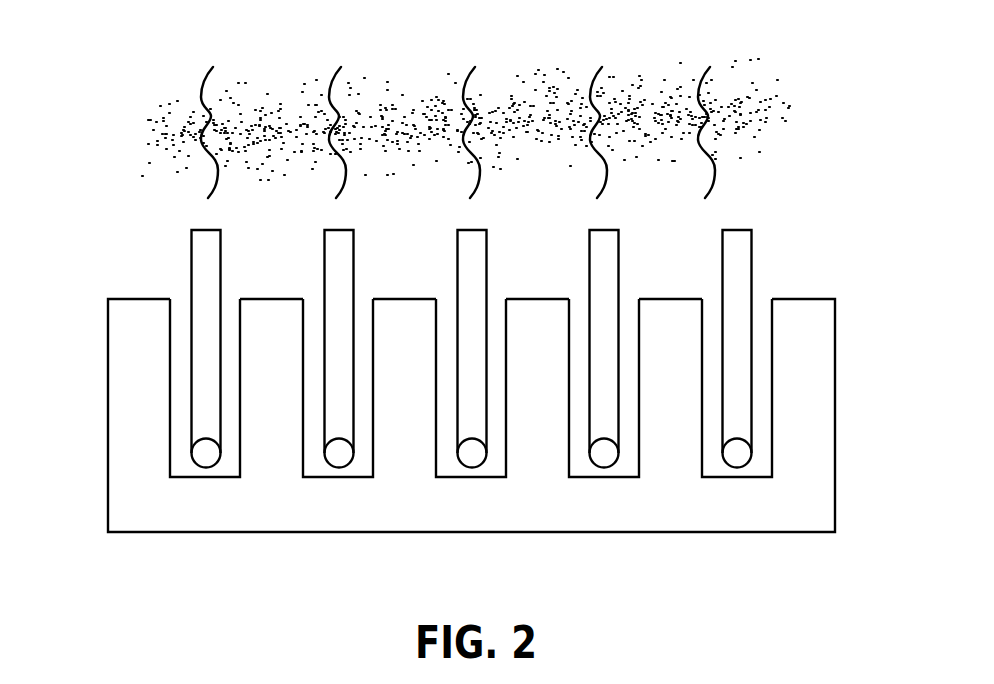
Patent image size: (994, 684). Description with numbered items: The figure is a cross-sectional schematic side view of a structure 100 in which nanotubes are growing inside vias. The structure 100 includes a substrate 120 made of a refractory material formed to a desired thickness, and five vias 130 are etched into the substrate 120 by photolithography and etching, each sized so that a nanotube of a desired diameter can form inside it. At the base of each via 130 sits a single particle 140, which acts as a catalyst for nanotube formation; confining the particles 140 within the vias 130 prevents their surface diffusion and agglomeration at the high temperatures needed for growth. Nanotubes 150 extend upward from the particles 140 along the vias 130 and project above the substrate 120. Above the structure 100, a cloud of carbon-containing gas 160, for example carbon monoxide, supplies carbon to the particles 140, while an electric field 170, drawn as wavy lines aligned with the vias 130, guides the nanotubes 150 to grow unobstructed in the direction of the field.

The structure 100 is at (846, 202).
The substrate 120 is at (122, 438).
The vias 130 is at (178, 400).
The particles 140 is at (202, 455).
The nanotubes 150 is at (200, 299).
The carbon-containing gas 160 is at (772, 102).
The electric field 170 is at (207, 82).